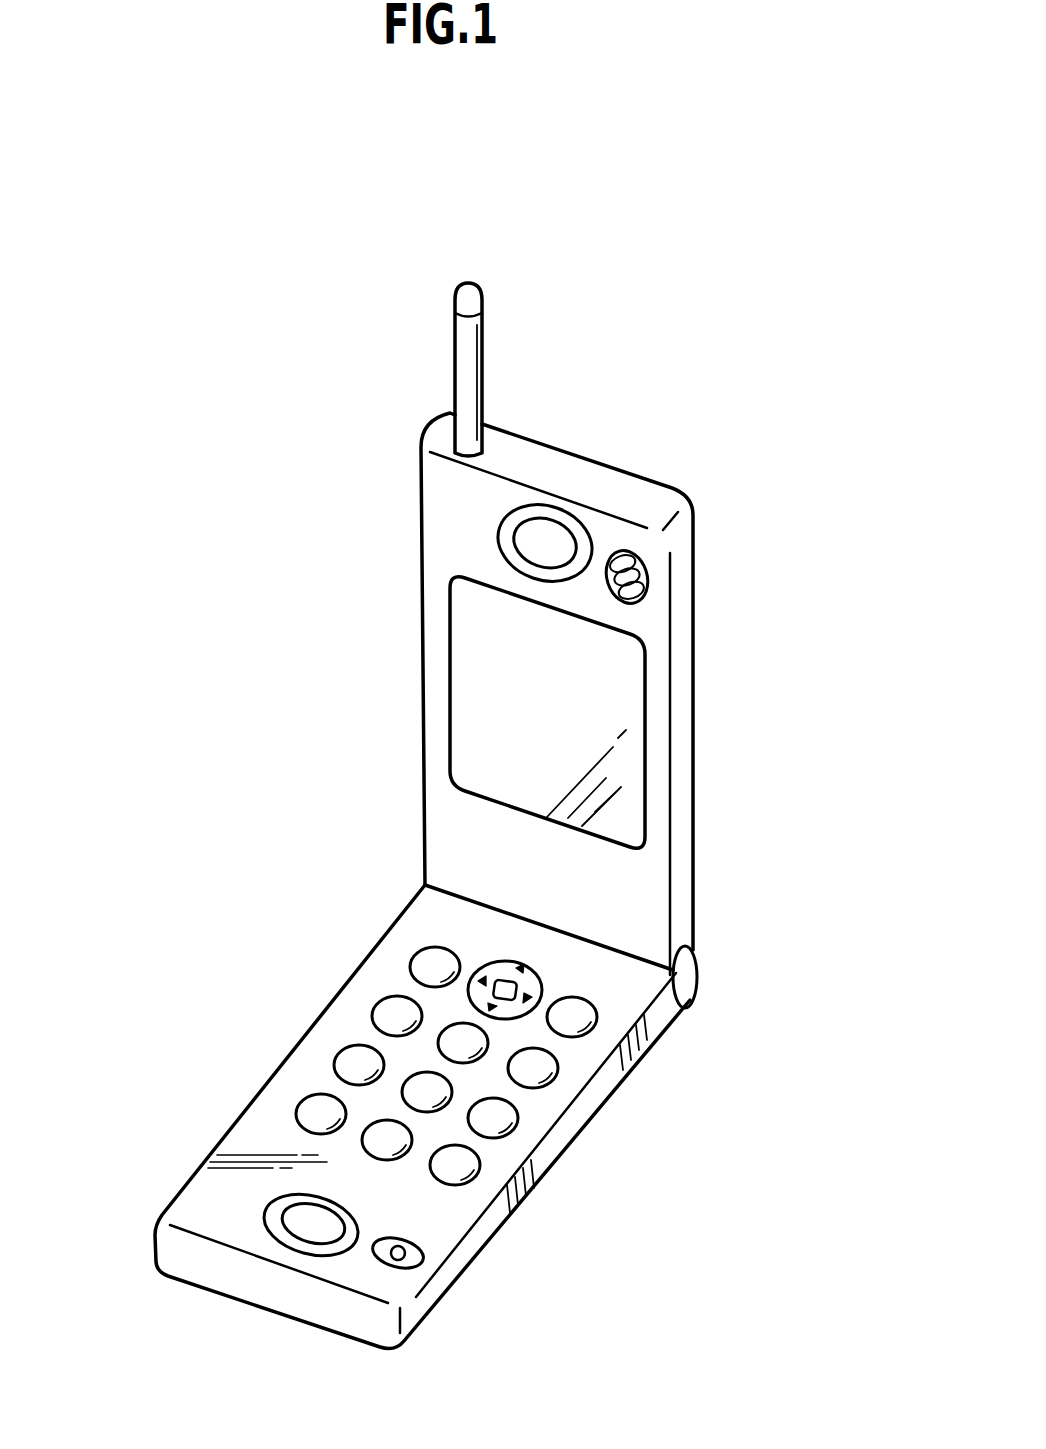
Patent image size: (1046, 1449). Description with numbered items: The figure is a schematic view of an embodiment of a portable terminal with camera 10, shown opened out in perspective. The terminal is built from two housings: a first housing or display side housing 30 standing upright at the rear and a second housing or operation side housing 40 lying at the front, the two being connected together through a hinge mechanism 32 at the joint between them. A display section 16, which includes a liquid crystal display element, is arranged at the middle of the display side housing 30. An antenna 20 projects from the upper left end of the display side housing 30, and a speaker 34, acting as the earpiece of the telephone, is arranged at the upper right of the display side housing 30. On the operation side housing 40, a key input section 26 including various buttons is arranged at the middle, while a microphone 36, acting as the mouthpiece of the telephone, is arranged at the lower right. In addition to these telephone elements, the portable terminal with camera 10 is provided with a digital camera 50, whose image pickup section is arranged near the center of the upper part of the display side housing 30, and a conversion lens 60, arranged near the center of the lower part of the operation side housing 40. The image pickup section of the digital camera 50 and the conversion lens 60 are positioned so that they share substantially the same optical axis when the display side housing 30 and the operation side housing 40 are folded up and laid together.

The portable terminal with camera 10 is at (585, 397).
The antenna 20 is at (458, 363).
The display side housing 30 is at (403, 605).
The digital camera 50 is at (547, 543).
The speaker 34 is at (640, 580).
The display section 16 is at (597, 688).
The hinge mechanism 32 is at (677, 973).
The operation side housing 40 is at (283, 1025).
The key input section 26 is at (425, 1092).
The microphone 36 is at (420, 1247).
The conversion lens 60 is at (317, 1223).